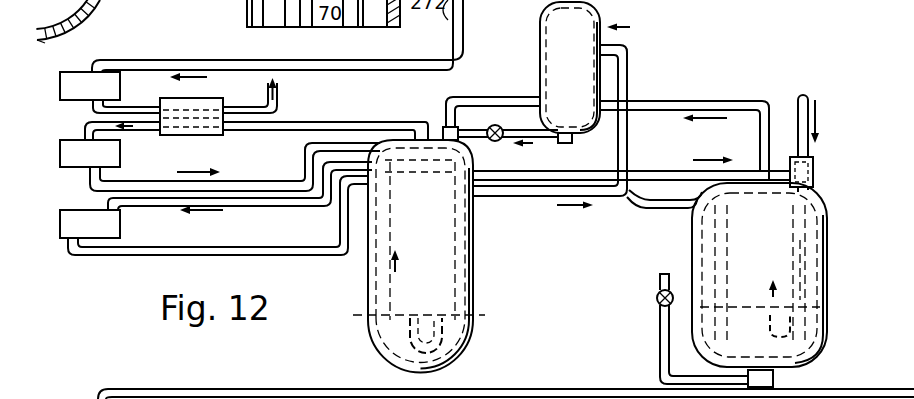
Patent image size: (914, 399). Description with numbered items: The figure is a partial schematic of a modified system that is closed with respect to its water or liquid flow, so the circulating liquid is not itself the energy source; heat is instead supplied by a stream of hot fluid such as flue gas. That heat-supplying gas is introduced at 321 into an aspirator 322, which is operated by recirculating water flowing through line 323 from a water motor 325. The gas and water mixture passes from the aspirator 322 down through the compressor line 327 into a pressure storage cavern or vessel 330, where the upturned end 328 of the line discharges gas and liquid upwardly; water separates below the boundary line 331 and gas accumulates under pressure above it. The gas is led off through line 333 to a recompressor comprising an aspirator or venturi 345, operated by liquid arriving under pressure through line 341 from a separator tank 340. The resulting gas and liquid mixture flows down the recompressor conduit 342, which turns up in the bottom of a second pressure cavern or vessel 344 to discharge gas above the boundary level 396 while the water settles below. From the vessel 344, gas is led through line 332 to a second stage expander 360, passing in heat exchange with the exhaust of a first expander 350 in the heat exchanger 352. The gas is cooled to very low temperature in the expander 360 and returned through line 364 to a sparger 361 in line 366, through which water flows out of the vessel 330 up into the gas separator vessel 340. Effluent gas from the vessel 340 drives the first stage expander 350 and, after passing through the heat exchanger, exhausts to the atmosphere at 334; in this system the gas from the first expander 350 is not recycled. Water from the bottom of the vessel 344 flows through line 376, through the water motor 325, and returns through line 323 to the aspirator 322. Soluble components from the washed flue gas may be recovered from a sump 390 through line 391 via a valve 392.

The heat supplying gas inlet 321 is at (798, 108).
The aspirator 322 is at (813, 180).
The line 323 is at (247, 251).
The water motor 325 is at (67, 207).
The compressor line 327 is at (790, 234).
The upturned end 328 is at (780, 337).
The pressure storage cavern or vessel 330 is at (820, 243).
The boundary line 331 is at (772, 305).
The line 332 is at (367, 110).
The line 333 is at (692, 97).
The exhaust to atmosphere 334 is at (278, 93).
The separator tank 340 is at (541, 52).
The line 341 is at (470, 142).
The recompressor conduit 342 is at (447, 245).
The second pressure cavern or vessel 344 is at (472, 250).
The aspirator or venturi 345 is at (445, 126).
The first stage expander 350 is at (93, 72).
The heat exchanger 352 is at (206, 104).
The second stage expander 360 is at (60, 158).
The sparger 361 is at (618, 169).
The line 364 is at (287, 180).
The line 366 is at (628, 136).
The line 376 is at (263, 205).
The sump 390 is at (775, 380).
The line 391 is at (660, 322).
The valve 392 is at (657, 293).
The boundary level 396 is at (390, 313).